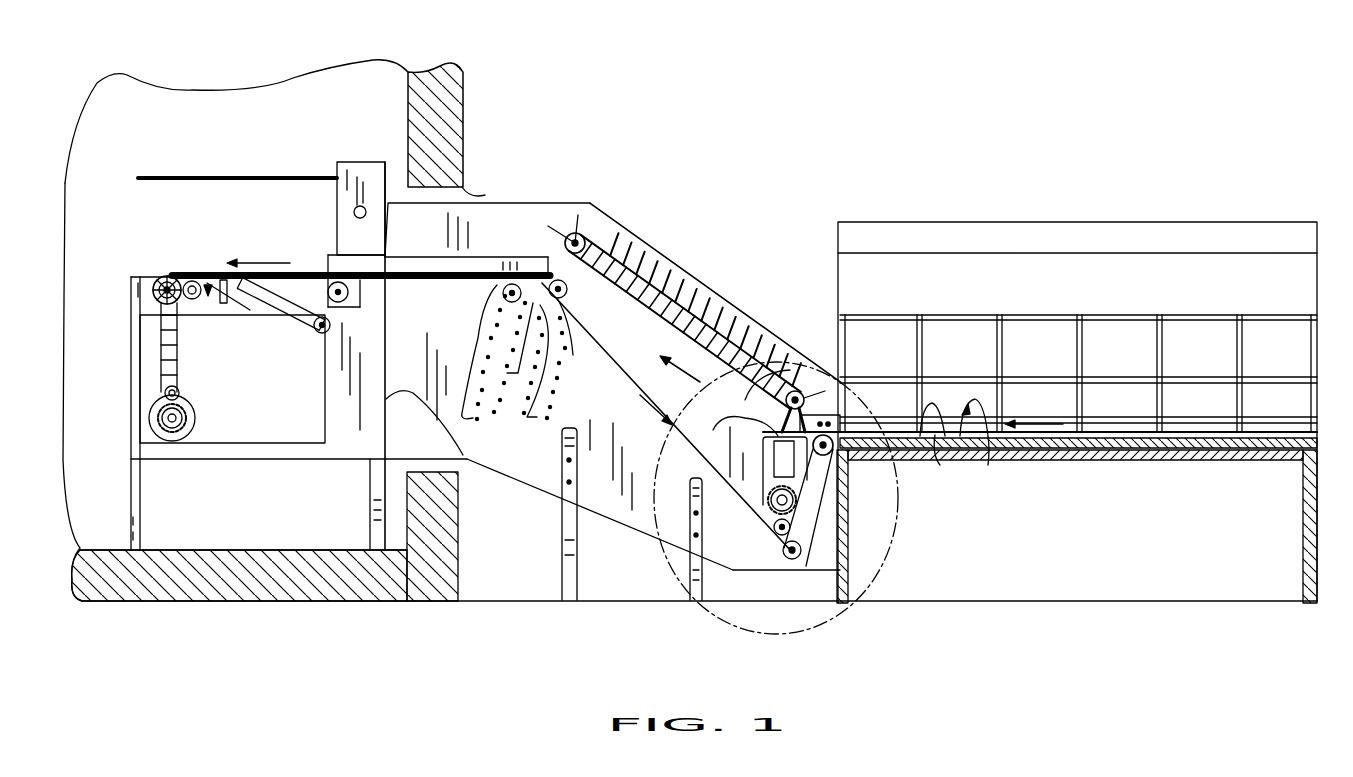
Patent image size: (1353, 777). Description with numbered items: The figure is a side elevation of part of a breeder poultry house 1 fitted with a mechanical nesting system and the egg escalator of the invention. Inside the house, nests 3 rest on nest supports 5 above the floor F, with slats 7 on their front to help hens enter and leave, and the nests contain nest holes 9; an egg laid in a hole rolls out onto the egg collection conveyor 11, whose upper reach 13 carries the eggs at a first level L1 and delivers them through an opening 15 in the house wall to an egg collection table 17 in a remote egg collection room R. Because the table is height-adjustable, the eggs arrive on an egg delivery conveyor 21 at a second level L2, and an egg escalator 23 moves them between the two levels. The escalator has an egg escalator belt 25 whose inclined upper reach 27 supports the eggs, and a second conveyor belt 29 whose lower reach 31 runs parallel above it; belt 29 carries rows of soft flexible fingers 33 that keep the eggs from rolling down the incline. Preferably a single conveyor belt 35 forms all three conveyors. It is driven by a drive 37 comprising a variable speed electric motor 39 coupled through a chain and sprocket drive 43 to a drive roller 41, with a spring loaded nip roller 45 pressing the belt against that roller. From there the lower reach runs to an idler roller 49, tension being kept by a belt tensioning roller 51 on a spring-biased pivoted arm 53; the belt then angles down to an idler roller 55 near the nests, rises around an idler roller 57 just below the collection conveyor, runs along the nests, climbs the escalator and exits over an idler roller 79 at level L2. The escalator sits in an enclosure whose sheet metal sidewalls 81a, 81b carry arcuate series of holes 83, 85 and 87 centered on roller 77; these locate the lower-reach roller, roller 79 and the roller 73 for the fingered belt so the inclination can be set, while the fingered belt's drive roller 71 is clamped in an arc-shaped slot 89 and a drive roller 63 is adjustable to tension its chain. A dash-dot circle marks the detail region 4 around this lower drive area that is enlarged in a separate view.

The poultry house 1 is at (496, 99).
The nests 3 is at (1195, 190).
The detail region 4 is at (897, 437).
The nest supports 5 is at (1303, 547).
The slats 7 is at (1045, 450).
The nest holes 9 is at (1028, 347).
The egg collection conveyor 11 is at (979, 443).
The upper reach 13 is at (936, 445).
The opening 15 is at (475, 197).
The egg collection table 17 is at (198, 253).
The egg delivery conveyor 21 is at (310, 262).
The egg escalator 23 is at (680, 246).
The egg escalator belt 25 is at (656, 312).
The upper reach 27 is at (623, 297).
The second conveyor belt 29 is at (727, 315).
The lower reach 31 is at (693, 337).
The flexible fingers 33 is at (635, 267).
The single conveyor belt 35 is at (210, 295).
The drive 37 is at (200, 391).
The variable speed electric motor 39 is at (197, 415).
The drive roller 41 is at (153, 298).
The chain and sprocket drive 43 is at (157, 367).
The spring loaded nip roller 45 is at (191, 300).
The idler roller 49 is at (503, 290).
The belt tensioning roller 51 is at (345, 387).
The pivoted arm 53 is at (278, 303).
The idler roller 55 is at (808, 520).
The idler roller 57 is at (845, 513).
The drive roller 63 is at (763, 503).
The drive roller 71 is at (796, 390).
The roller 73 is at (570, 230).
The roller 77 is at (746, 447).
The idler roller 79 is at (550, 280).
The sidewall 81a is at (420, 428).
The sidewall 81b is at (545, 450).
The first arcuate series of holes 83 is at (478, 338).
The second arcuate series of holes 85 is at (555, 359).
The third arcuate series of holes 87 is at (537, 327).
The arc-shaped slot 89 is at (778, 380).
The egg collection room R is at (320, 124).
The floor F is at (1012, 598).
The first level L1 is at (1323, 431).
The second level L2 is at (118, 275).